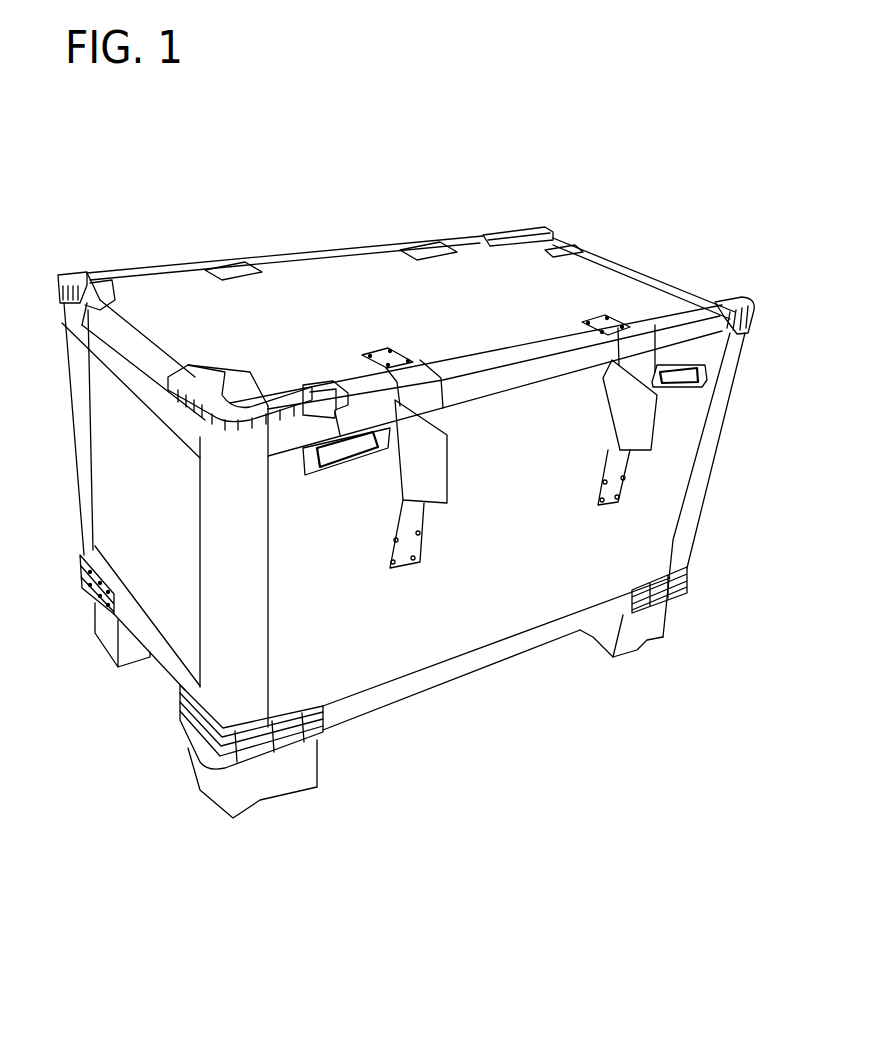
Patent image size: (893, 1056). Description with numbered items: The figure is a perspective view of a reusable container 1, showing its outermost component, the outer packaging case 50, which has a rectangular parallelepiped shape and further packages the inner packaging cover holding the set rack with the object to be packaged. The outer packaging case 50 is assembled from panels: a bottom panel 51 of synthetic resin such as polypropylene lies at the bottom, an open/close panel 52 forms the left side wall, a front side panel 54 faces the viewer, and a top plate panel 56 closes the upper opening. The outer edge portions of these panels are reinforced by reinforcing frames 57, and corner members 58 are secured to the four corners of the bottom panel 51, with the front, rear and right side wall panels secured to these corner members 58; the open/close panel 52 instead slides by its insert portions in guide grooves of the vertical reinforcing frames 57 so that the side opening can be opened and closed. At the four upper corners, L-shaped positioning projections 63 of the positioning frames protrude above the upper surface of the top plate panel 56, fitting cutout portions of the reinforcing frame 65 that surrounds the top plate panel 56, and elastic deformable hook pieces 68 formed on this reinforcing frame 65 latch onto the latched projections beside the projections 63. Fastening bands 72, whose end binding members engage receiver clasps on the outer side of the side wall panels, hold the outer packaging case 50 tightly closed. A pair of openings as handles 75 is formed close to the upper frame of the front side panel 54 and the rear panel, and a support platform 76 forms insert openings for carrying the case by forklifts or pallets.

The reusable container 1 is at (577, 224).
The outer packaging case 50 is at (165, 263).
The bottom panel 51 is at (363, 717).
The open/close panel 52 is at (112, 495).
The front side panel 54 is at (490, 632).
The top plate panel 56 is at (468, 265).
The reinforcing frame 57 is at (363, 252).
The corner member 58 is at (80, 578).
The L-shaped positioning projection 63 is at (74, 272).
The reinforcing frame 65 is at (552, 352).
The elastic deformable hook piece 68 is at (311, 418).
The fastening band 72 is at (645, 350).
The opening as handle 75 is at (693, 383).
The support platform 76 is at (650, 637).